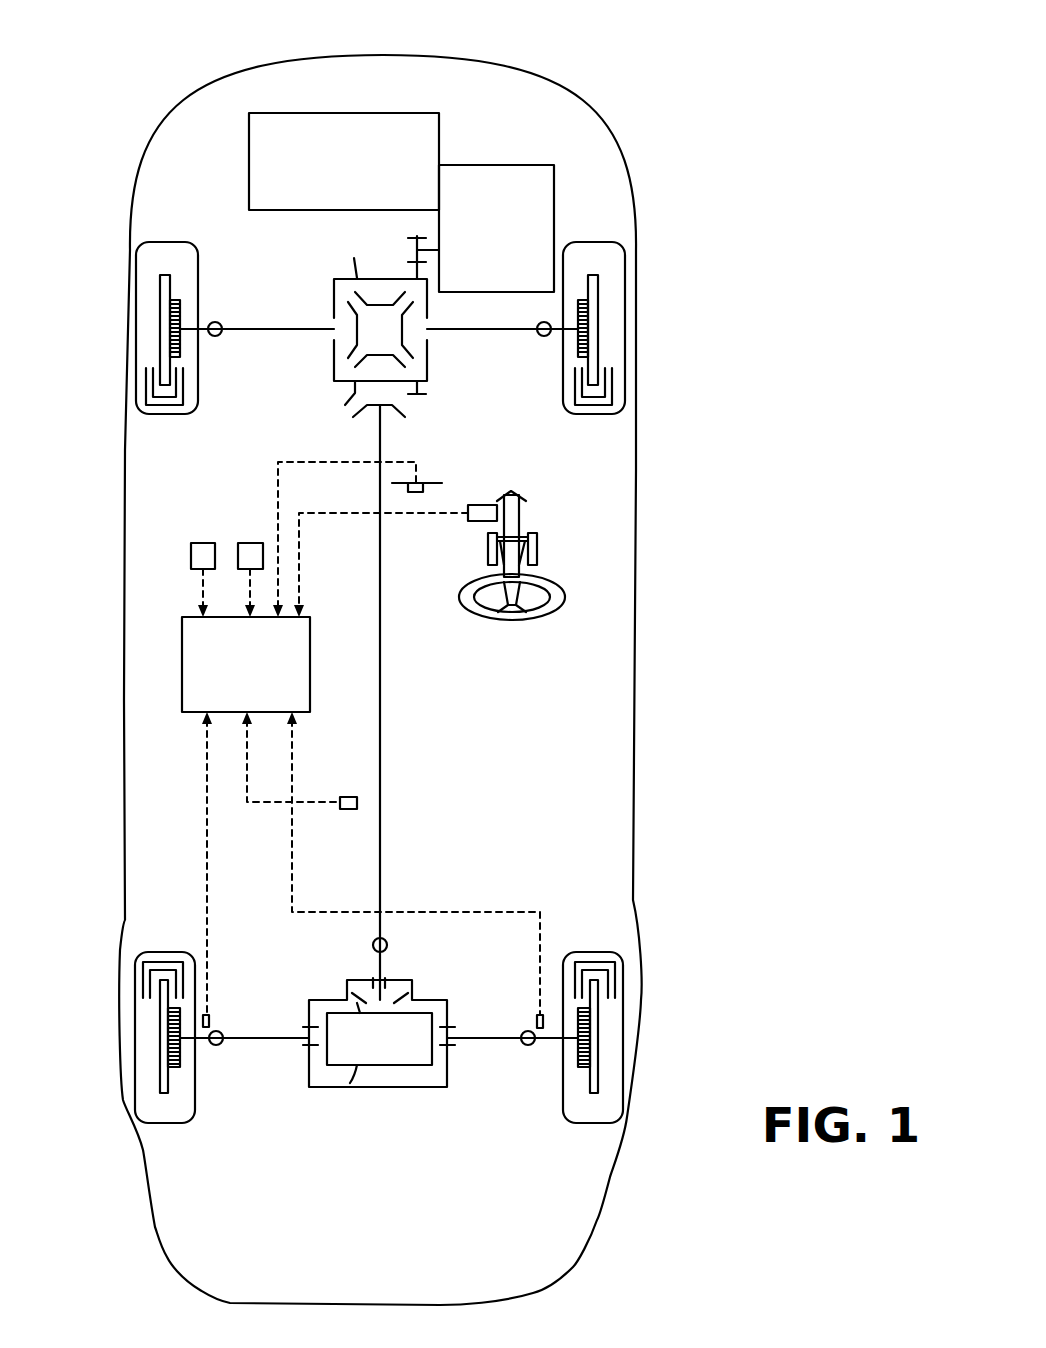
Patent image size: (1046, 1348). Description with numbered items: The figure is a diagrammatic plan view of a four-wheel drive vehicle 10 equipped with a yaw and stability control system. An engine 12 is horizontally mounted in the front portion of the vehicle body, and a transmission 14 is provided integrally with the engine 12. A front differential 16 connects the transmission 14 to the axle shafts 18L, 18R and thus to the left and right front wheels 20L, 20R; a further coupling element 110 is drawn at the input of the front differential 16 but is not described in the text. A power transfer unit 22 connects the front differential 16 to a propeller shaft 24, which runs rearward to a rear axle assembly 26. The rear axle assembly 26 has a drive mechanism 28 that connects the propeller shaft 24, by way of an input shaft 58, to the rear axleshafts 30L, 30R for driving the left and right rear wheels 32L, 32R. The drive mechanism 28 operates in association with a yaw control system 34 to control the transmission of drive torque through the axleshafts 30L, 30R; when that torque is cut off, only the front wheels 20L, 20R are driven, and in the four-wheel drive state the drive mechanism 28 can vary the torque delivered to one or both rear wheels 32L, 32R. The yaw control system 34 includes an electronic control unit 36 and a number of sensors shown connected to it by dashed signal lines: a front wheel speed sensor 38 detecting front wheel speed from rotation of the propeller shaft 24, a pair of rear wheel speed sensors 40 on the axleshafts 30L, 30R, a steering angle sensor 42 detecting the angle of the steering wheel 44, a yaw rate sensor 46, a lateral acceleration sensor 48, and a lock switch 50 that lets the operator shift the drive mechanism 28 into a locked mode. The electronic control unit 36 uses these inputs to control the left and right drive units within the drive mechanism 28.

The four-wheel drive vehicle 10 is at (661, 472).
The engine 12 is at (330, 125).
The transmission 14 is at (498, 178).
The front differential 16 is at (452, 368).
The clutch coupling 110 is at (354, 258).
The left front axle shaft 18L is at (278, 330).
The right front axle shaft 18R is at (525, 330).
The left front wheel 20L is at (143, 243).
The right front wheel 20R is at (625, 243).
The power transfer unit 22 is at (324, 421).
The propeller shaft 24 is at (380, 660).
The rear axle assembly 26 is at (517, 950).
The drive mechanism 28 is at (391, 1066).
The left rear axleshaft 30L is at (270, 1040).
The right rear axleshaft 30R is at (488, 1040).
The left rear wheel 32L is at (138, 954).
The right rear wheel 32R is at (625, 952).
The yaw control system 34 is at (160, 630).
The electronic control unit 36 is at (195, 669).
The front wheel speed sensor 38 is at (357, 802).
The rear wheel speed sensors 40 is at (535, 1021).
The steering angle sensor 42 is at (480, 508).
The steering wheel 44 is at (548, 612).
The yaw rate sensor 46 is at (252, 552).
The lateral acceleration sensor 48 is at (204, 552).
The lock switch 50 is at (413, 492).
The input shaft 58 is at (383, 968).